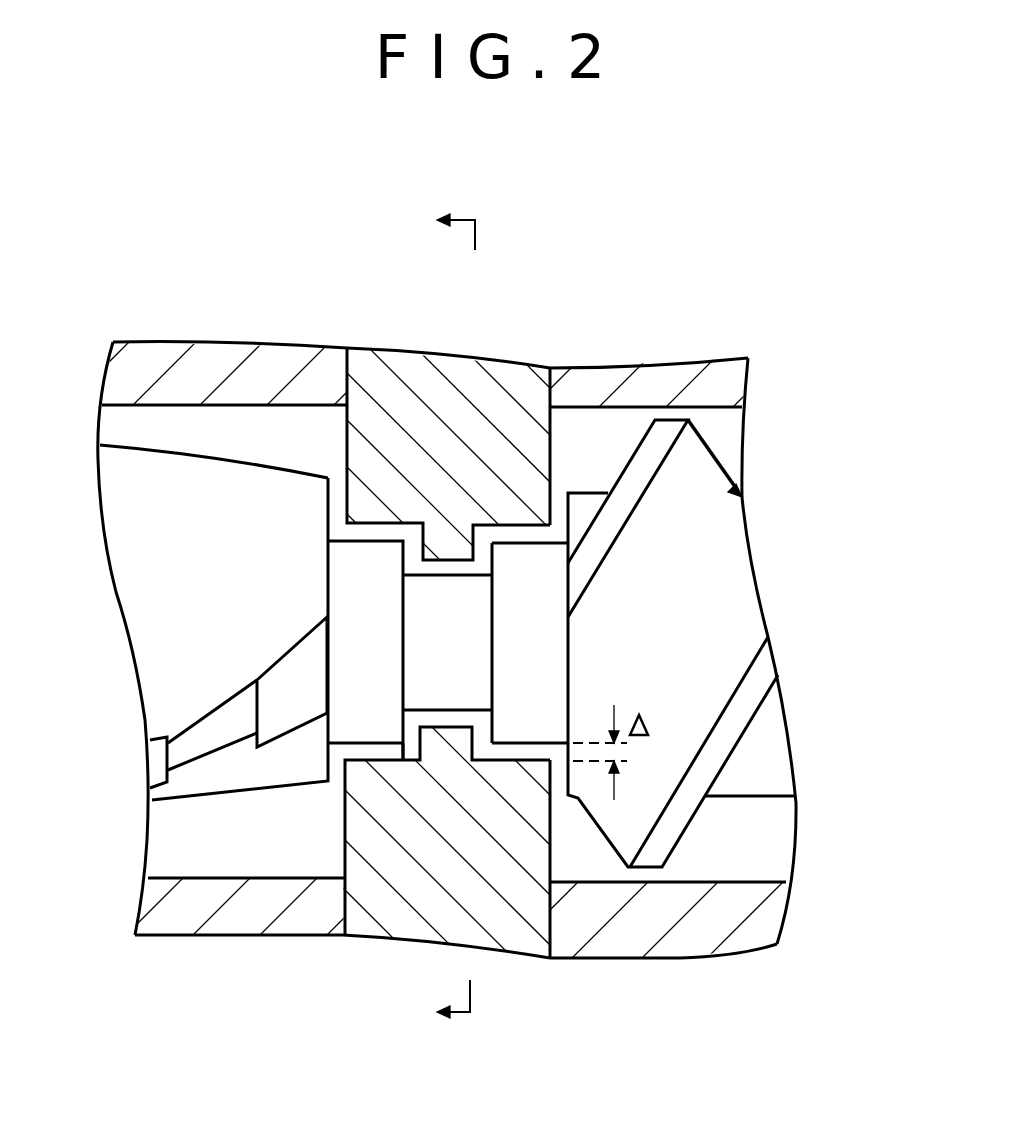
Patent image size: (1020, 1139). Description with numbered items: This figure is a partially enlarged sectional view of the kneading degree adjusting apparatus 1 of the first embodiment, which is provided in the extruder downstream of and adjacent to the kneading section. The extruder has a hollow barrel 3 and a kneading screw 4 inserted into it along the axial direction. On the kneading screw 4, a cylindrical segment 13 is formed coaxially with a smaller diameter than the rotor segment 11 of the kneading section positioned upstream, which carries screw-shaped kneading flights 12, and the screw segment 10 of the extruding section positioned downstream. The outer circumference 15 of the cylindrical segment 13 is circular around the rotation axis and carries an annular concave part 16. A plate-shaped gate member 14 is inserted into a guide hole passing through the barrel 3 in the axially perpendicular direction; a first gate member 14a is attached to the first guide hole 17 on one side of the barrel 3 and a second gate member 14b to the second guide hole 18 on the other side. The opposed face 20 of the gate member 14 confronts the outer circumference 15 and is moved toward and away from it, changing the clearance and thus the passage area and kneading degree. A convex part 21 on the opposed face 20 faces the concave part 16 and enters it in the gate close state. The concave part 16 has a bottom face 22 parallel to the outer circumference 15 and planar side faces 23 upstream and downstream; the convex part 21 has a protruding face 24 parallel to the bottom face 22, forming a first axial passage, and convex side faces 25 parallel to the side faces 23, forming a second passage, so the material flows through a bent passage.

The kneading degree adjusting apparatus 1 is at (557, 267).
The barrel 3 is at (710, 382).
The kneading screw 4 is at (740, 772).
The screw segment 10 is at (697, 679).
The rotor segment 11 is at (157, 680).
The kneading flight 12 is at (155, 768).
The cylindrical segment 13 is at (357, 750).
The gate member 14 is at (355, 303).
The first gate member 14a is at (493, 397).
The second gate member 14b is at (510, 925).
The outer circumference 15 is at (553, 543).
The concave part 16 is at (492, 726).
The first guide hole 17 is at (550, 397).
The second guide hole 18 is at (553, 885).
The opposed face 20 is at (362, 524).
The convex part 21 is at (408, 564).
The bottom face 22 is at (430, 712).
The side face 23 is at (406, 746).
The protruding face 24 is at (447, 562).
The convex side face 25 is at (428, 552).